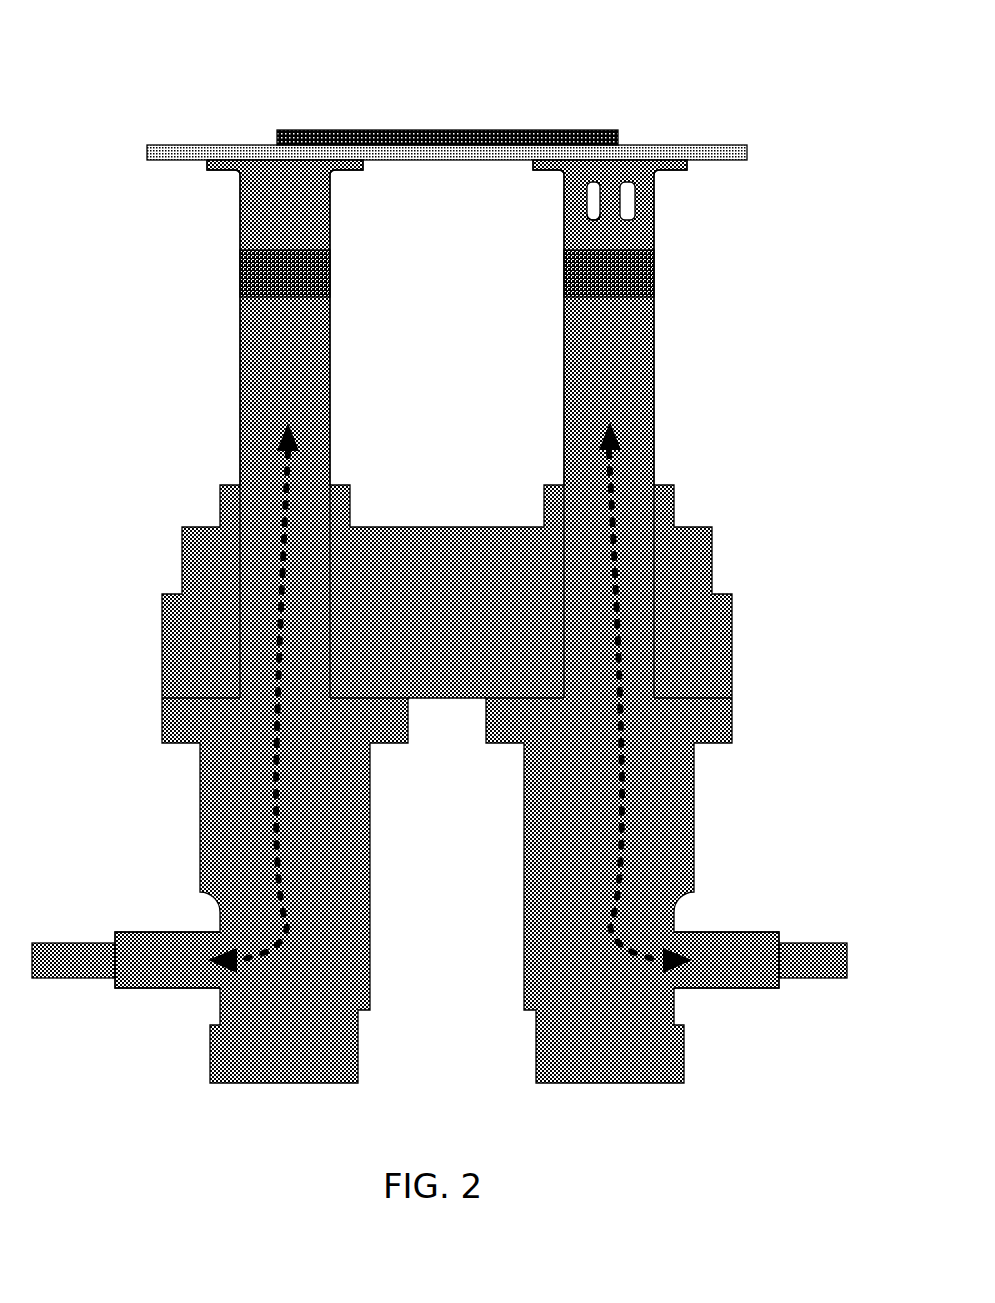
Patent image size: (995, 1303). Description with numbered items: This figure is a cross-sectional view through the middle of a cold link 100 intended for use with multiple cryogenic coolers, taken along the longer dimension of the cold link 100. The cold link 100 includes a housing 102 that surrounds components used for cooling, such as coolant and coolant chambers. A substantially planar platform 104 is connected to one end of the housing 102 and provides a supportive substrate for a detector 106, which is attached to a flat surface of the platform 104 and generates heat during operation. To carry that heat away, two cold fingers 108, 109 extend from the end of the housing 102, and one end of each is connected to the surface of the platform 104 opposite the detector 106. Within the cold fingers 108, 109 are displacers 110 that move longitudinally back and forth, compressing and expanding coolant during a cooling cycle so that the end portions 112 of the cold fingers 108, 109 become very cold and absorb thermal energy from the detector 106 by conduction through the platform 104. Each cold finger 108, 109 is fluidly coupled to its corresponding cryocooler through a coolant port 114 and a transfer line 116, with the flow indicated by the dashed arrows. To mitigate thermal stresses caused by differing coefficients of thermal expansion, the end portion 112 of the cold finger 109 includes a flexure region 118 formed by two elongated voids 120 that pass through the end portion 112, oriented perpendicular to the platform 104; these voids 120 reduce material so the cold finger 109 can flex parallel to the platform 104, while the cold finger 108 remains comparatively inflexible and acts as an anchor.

The cold link 100 is at (334, 57).
The housing 102 is at (162, 622).
The platform 104 is at (147, 155).
The detector 106 is at (475, 130).
The cold finger 108 is at (240, 385).
The cold finger 109 is at (654, 380).
The displacer 110 is at (240, 275).
The end portion 112 is at (240, 210).
The coolant port 114 is at (150, 932).
The transfer line 116 is at (76, 978).
The flexure region 118 is at (575, 210).
The void 120 is at (593, 216).